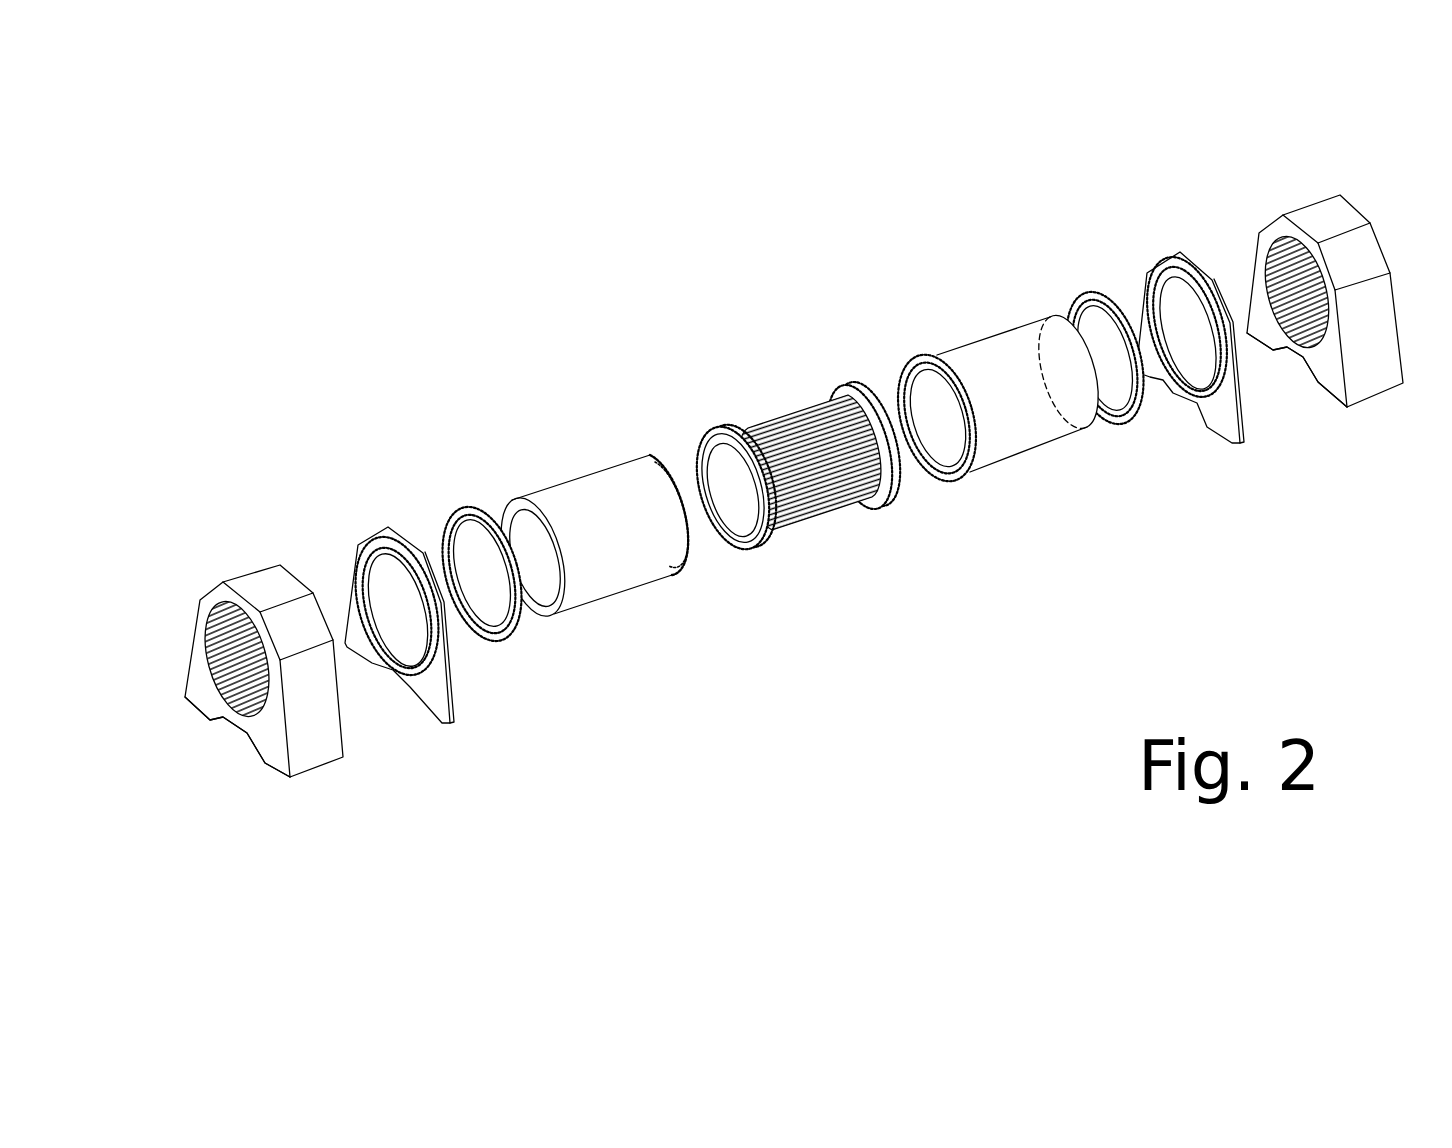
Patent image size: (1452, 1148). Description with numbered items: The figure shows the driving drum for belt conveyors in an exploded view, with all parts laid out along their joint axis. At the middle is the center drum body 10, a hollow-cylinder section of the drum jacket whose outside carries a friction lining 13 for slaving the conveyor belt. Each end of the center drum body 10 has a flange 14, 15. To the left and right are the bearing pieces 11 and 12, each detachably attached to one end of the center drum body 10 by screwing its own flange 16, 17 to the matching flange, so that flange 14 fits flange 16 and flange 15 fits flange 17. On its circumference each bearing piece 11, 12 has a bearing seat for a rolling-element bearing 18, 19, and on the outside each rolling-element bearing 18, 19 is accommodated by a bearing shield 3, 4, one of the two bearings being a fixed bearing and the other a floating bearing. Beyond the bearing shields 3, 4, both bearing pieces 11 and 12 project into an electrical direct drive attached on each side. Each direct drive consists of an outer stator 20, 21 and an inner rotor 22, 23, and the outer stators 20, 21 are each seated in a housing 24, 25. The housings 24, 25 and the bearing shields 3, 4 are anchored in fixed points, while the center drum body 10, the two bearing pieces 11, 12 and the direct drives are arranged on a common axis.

The bearing shield 3 is at (450, 718).
The bearing shield 4 is at (1242, 445).
The center drum body 10 is at (878, 492).
The bearing piece 11 is at (580, 502).
The bearing piece 12 is at (1013, 352).
The friction lining 13 is at (797, 428).
The flange 14 is at (754, 552).
The flange 15 is at (897, 488).
The flange 16 is at (650, 453).
The flange 17 is at (918, 355).
The rolling-element bearing 18 is at (478, 513).
The rolling-element bearing 19 is at (1088, 293).
The outer stator 20 is at (258, 722).
The outer stator 21 is at (1318, 353).
The inner rotor 22 is at (247, 690).
The inner rotor 23 is at (1298, 317).
The housing 24 is at (270, 582).
The housing 25 is at (1342, 218).